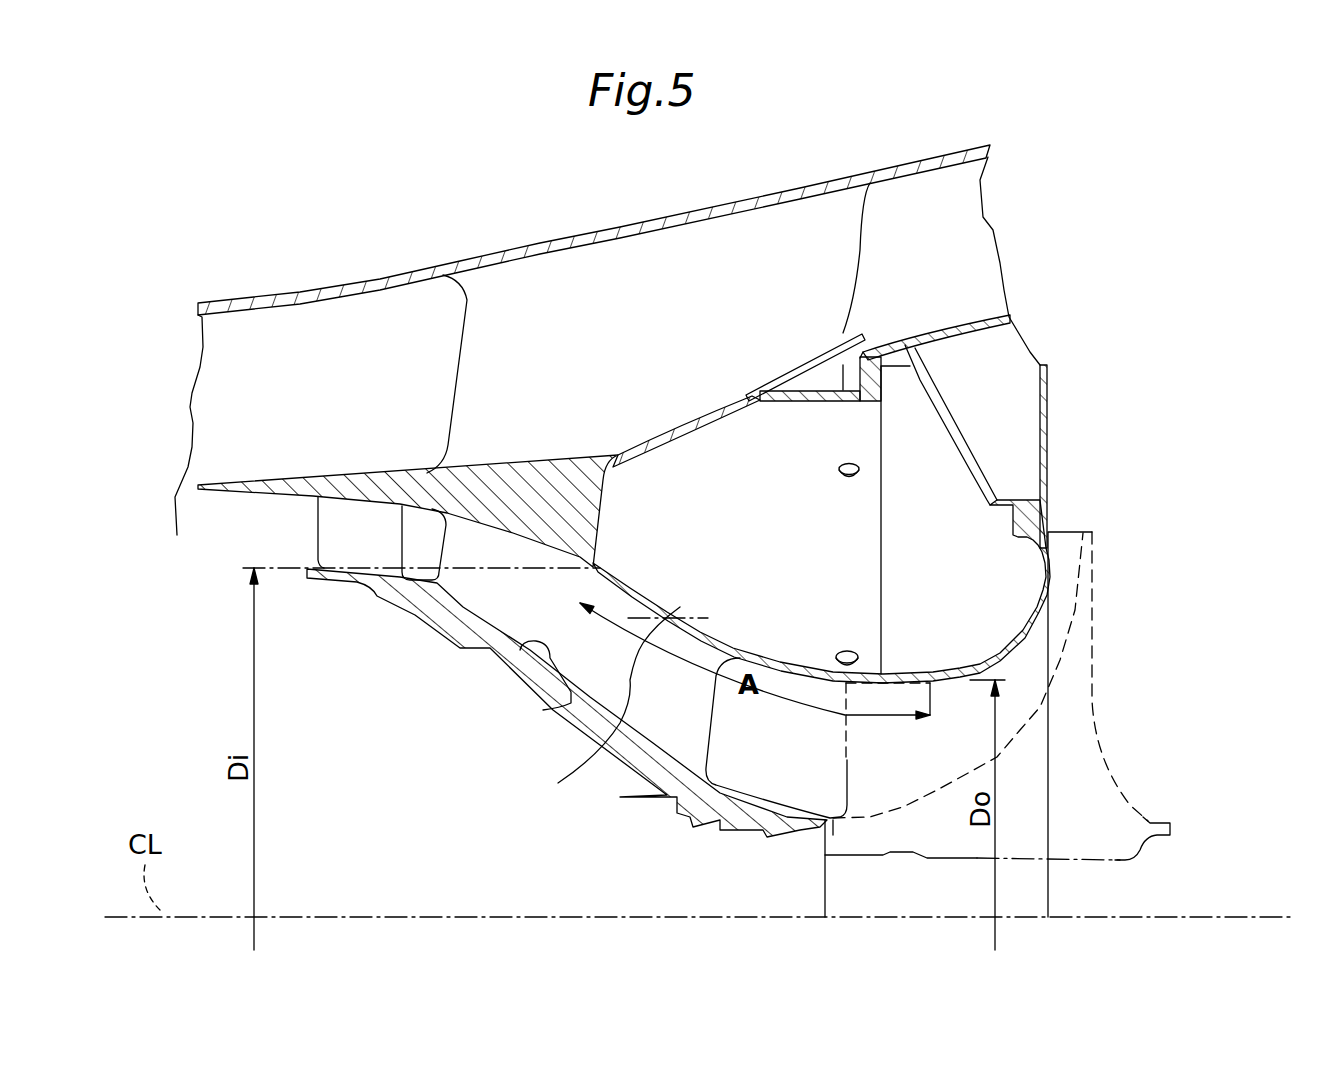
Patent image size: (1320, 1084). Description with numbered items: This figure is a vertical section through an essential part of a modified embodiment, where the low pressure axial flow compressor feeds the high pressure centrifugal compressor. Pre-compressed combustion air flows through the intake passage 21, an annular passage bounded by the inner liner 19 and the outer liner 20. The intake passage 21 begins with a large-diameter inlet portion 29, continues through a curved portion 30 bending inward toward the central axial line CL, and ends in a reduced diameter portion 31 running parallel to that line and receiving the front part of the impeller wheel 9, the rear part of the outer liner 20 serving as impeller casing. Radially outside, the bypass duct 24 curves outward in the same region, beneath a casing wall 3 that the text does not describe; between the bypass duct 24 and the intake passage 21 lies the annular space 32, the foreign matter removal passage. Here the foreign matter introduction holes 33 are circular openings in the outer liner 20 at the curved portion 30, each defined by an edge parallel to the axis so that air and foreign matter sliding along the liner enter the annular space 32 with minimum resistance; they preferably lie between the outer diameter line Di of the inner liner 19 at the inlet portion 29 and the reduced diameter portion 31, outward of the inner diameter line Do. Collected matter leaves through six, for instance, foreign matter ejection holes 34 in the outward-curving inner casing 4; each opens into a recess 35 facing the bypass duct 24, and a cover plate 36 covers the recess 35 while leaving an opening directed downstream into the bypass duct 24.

The outer casing 3 is at (503, 253).
The inner casing 4 is at (990, 314).
The impeller wheel 9 is at (1100, 750).
The inner liner 19 is at (472, 622).
The outer liner 20 is at (710, 633).
The intake passage 21 is at (550, 657).
The bypass duct 24 is at (604, 354).
The inlet portion 29 is at (310, 549).
The curved portion 30 is at (607, 654).
The reduced diameter portion 31 is at (890, 757).
The annular space 32 is at (804, 544).
The foreign matter introduction holes 33 is at (600, 707).
The foreign matter ejection holes 34 is at (850, 403).
The recess 35 is at (845, 380).
The cover plate 36 is at (813, 370).